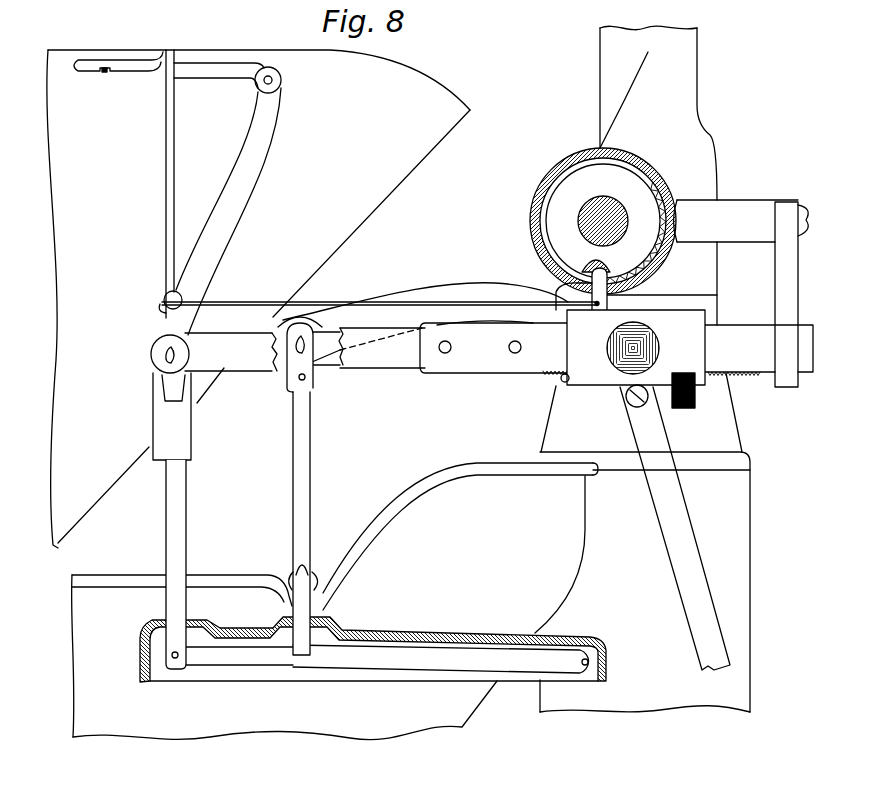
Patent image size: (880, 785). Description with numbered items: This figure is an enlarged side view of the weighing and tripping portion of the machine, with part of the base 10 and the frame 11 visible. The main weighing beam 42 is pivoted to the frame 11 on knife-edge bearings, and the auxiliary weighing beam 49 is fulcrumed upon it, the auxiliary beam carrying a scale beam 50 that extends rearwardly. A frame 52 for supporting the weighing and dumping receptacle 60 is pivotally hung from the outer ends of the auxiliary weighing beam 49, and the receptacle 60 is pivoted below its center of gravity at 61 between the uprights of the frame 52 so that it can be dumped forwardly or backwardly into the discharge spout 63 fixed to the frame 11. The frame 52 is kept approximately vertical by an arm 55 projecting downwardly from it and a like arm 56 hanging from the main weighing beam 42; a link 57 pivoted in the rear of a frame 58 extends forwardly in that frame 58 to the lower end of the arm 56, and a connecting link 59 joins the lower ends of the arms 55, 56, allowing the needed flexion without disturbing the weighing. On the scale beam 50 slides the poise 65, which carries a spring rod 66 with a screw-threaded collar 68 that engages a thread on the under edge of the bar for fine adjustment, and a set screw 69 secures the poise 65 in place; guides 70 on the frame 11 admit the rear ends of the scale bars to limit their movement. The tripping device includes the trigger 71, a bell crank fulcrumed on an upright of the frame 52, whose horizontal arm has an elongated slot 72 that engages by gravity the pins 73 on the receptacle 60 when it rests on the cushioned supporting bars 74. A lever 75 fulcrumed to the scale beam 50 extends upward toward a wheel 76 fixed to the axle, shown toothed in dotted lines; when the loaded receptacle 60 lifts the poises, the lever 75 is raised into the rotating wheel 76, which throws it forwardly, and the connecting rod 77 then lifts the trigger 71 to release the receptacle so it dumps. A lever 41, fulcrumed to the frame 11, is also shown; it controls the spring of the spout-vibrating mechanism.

The base 10 is at (536, 542).
The frame 11 is at (699, 175).
The lever 41 is at (675, 527).
The main weighing beam 42 is at (467, 292).
The auxiliary weighing beam 49 is at (359, 349).
The scale beam 50 is at (759, 350).
The frame 52 is at (192, 255).
The arm 55 is at (178, 530).
The arm 56 is at (306, 414).
The link 57 is at (441, 659).
The frame 58 is at (237, 611).
The connecting link 59 is at (239, 656).
The weighing and dumping receptacle 60 is at (258, 299).
The pivot 61 is at (182, 300).
The discharge spout 63 is at (284, 657).
The sliding poise 65 is at (636, 347).
The spring rod 66 is at (565, 382).
The screw-threaded collar 68 is at (696, 394).
The set screw 69 is at (652, 358).
The guides 70 is at (786, 283).
The trigger 71 is at (168, 137).
The elongated slot 72 is at (112, 73).
The pins 73 is at (102, 72).
The cushioned supporting bars 74 is at (312, 565).
The lever 75 is at (588, 283).
The wheel 76 is at (603, 221).
The connecting rod 77 is at (358, 302).